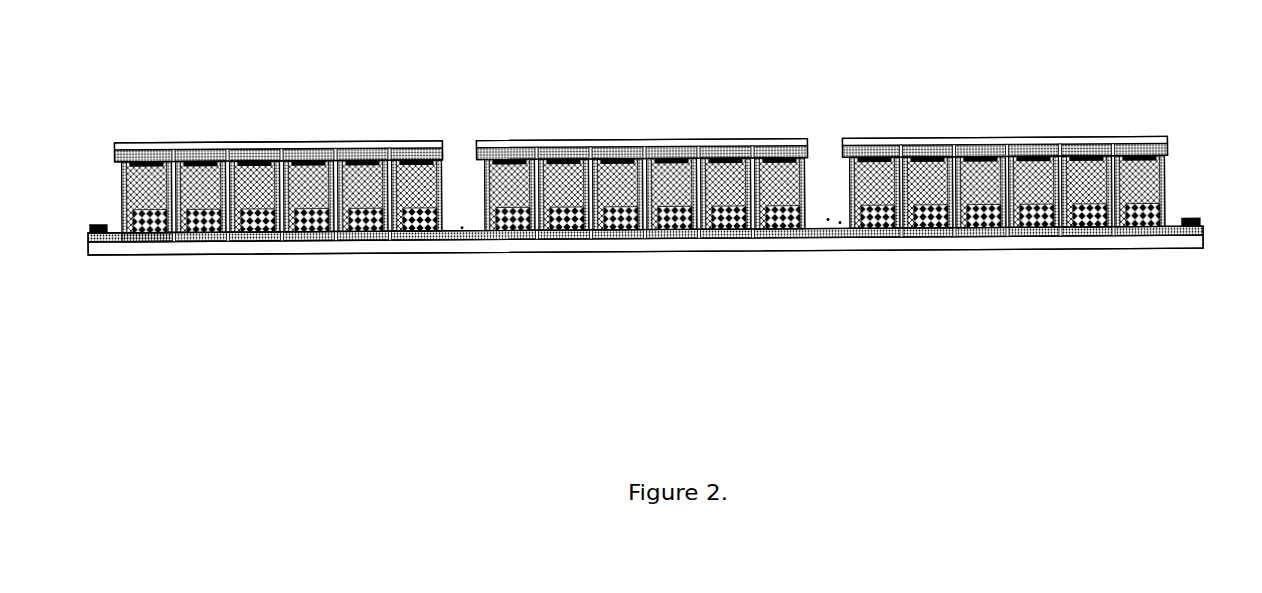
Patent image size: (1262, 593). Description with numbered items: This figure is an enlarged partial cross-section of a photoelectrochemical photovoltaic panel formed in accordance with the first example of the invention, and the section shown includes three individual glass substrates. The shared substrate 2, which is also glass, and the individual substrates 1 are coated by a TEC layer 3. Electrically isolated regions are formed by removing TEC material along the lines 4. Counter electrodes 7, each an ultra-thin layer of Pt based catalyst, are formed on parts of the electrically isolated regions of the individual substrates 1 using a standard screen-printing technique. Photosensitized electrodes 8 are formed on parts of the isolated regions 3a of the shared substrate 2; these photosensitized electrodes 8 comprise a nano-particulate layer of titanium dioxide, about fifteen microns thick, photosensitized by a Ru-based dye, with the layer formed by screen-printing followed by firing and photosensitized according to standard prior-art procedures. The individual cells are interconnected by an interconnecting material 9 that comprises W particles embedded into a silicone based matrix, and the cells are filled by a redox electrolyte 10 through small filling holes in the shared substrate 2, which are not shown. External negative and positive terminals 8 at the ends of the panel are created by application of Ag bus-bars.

The individual substrates 1 is at (317, 143).
The shared substrate 2 is at (317, 248).
The TEC layer 3 is at (148, 157).
The isolated regions 3a is at (147, 240).
The lines 4 is at (170, 162).
The counter electrodes 7 is at (252, 158).
The photosensitized electrodes 8 is at (100, 225).
The interconnecting material 9 is at (388, 183).
The redox electrolyte 10 is at (197, 185).